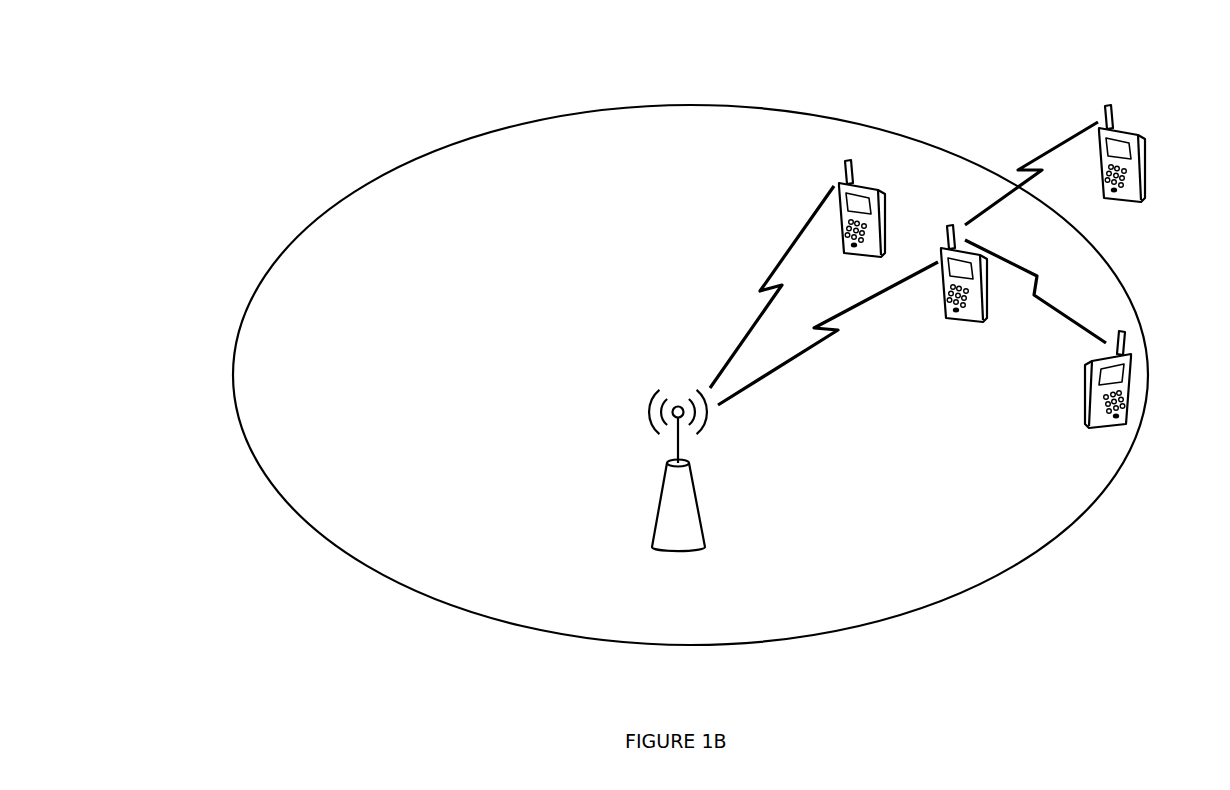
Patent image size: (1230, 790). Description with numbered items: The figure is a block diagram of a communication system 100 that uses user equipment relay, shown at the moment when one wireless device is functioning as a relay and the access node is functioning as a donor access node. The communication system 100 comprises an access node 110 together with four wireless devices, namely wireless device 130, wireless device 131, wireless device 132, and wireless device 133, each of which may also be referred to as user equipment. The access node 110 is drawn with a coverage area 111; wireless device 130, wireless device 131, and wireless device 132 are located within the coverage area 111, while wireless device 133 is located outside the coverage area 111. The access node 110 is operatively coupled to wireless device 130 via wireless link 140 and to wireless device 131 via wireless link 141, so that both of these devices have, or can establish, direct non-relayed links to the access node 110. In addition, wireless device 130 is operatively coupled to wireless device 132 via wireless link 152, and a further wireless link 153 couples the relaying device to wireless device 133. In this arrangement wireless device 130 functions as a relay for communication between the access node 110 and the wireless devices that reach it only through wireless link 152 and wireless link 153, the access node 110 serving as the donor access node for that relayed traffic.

The communication system 100 is at (206, 34).
The coverage area 111 is at (696, 153).
The access node 110 is at (662, 542).
The wireless device 130 is at (958, 326).
The wireless device 131 is at (890, 212).
The wireless device 132 is at (1098, 428).
The wireless device 133 is at (1152, 131).
The wireless link 140 is at (829, 337).
The wireless link 141 is at (766, 284).
The wireless link 152 is at (1071, 312).
The wireless link 153 is at (1058, 140).